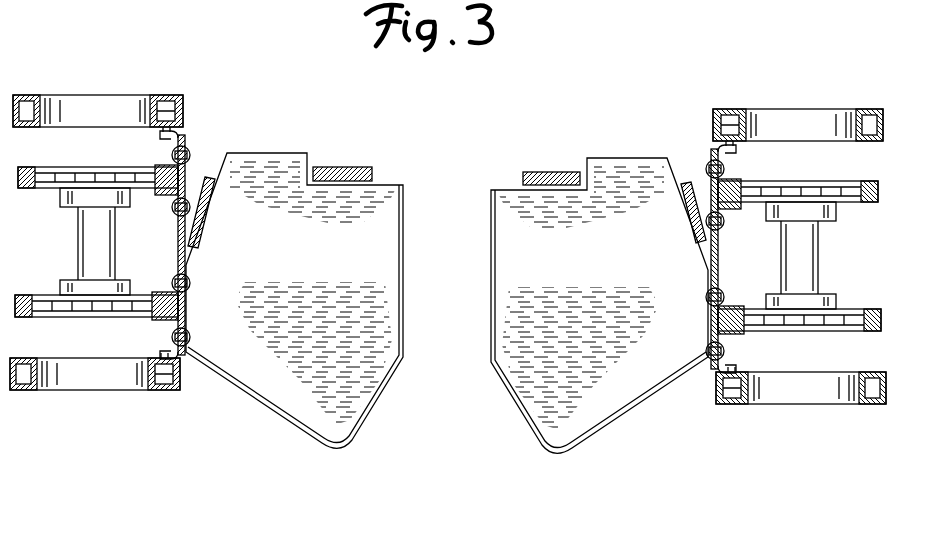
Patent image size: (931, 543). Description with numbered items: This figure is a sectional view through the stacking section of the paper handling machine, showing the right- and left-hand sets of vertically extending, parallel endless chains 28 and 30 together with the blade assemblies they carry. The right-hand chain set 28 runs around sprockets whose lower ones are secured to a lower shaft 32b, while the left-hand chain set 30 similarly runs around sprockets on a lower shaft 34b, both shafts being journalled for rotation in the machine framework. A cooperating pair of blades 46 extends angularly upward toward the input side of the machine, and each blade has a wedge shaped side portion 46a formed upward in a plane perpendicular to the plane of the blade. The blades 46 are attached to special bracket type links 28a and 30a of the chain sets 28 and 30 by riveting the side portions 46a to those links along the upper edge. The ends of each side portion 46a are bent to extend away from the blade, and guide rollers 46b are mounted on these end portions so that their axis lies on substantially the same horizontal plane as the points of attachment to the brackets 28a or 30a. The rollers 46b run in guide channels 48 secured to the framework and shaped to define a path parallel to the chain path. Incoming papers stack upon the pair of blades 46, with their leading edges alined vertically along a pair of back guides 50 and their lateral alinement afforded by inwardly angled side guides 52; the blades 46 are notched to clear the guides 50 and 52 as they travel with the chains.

The right-hand chain set 28 is at (851, 182).
The bracket type link 28a is at (744, 178).
The left-hand chain set 30 is at (21, 295).
The bracket type link 30a is at (152, 293).
The lower shaft 32b is at (816, 255).
The lower shaft 34b is at (80, 244).
The blade 46 is at (488, 400).
The wedge shaped side portion 46a is at (187, 262).
The guide roller 46b is at (168, 95).
The guide channel 48 is at (67, 95).
The back guide 50 is at (345, 167).
The side guide 52 is at (205, 176).